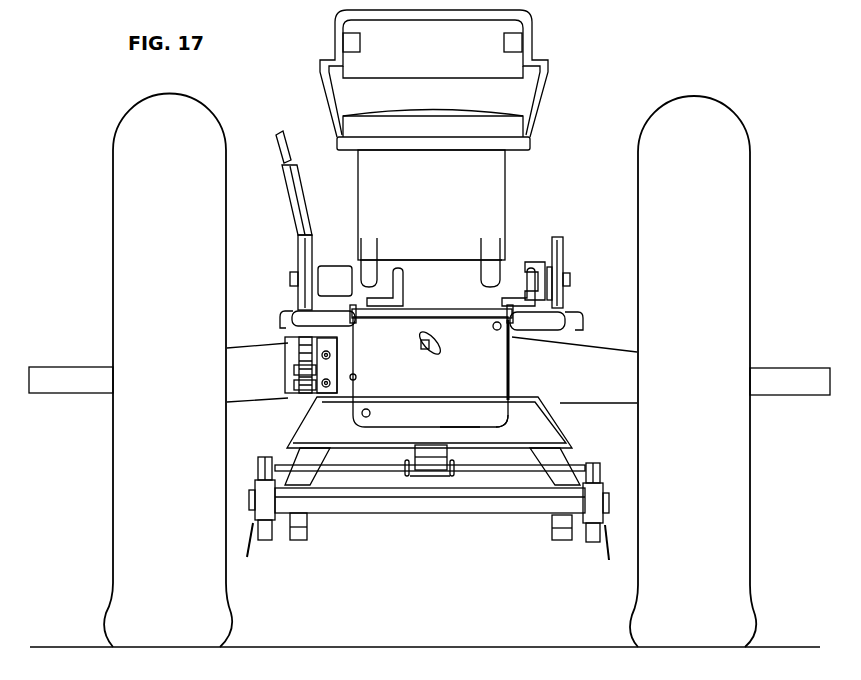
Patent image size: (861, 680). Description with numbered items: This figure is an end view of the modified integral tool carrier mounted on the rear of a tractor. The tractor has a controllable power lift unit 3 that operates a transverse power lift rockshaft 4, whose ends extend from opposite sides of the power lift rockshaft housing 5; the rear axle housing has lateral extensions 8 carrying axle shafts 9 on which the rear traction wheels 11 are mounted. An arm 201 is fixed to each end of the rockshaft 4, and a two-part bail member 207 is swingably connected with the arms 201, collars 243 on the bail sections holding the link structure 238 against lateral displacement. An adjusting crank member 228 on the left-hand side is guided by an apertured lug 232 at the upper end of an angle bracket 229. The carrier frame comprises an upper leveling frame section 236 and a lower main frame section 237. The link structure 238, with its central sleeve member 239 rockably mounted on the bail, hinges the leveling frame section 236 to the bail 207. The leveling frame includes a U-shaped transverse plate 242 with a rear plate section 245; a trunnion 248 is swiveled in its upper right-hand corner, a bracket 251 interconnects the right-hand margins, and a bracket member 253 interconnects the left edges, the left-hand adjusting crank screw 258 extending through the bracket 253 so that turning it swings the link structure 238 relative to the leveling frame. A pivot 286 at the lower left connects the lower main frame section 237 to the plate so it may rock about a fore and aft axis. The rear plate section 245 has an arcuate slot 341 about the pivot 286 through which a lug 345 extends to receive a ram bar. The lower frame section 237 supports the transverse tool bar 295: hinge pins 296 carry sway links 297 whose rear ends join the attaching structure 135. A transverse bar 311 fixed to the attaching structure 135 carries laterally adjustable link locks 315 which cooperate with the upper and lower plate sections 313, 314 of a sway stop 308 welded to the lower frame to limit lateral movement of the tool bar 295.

The controllable power lift unit 3 is at (440, 258).
The power lift rockshaft 4 is at (567, 273).
The power lift rockshaft housing 5 is at (468, 262).
The lateral extensions 8 is at (248, 347).
The axle shafts 9 is at (60, 378).
The rear traction wheels 11 is at (118, 190).
The attaching structure 135 is at (254, 479).
The arm 201 is at (300, 263).
The bail member 207 is at (536, 332).
The adjusting crank member 228 is at (287, 160).
The angle bracket 229 is at (300, 185).
The apertured lug 232 is at (285, 374).
The upper leveling frame section 236 is at (520, 383).
The lower main frame section 237 is at (567, 425).
The link structure 238 is at (423, 307).
The central sleeve member 239 is at (453, 318).
The transverse plate 242 is at (464, 433).
The collars 243 is at (338, 280).
The rear plate section 245 is at (490, 406).
The trunnion 248 is at (490, 323).
The bracket 251 is at (506, 351).
The bracket member 253 is at (356, 378).
The adjusting crank screw 258 is at (383, 302).
The pivot 286 is at (362, 415).
The tool bar 295 is at (461, 508).
The hinge pins 296 is at (305, 540).
The sway links 297 is at (282, 541).
The sway stop 308 is at (434, 440).
The transverse bar 311 is at (372, 468).
The upper plate section 313 is at (416, 457).
The lower plate section 314 is at (418, 482).
The link locks 315 is at (404, 468).
The arcuate slot 341 is at (416, 337).
The lug 345 is at (426, 350).